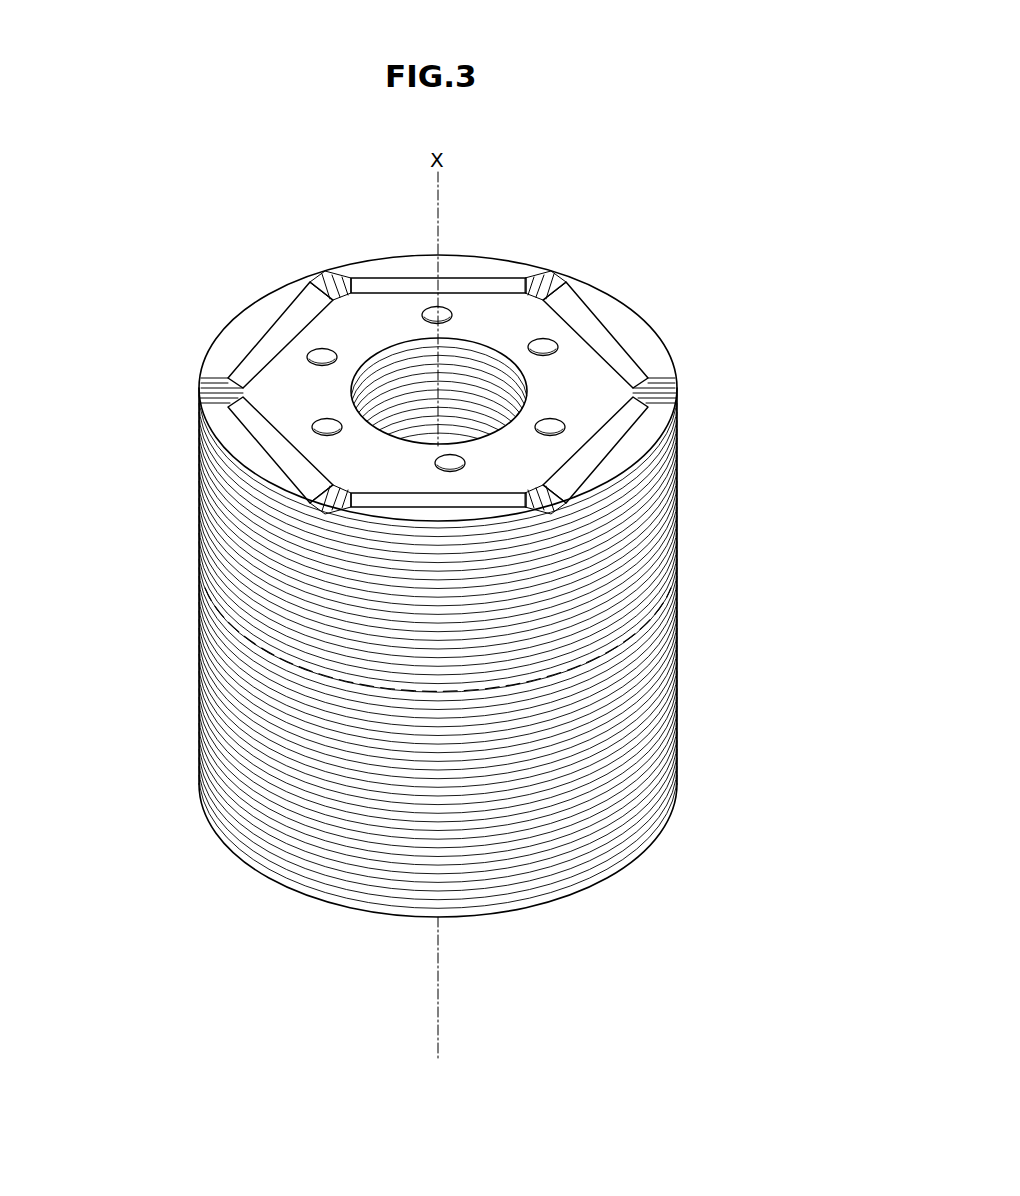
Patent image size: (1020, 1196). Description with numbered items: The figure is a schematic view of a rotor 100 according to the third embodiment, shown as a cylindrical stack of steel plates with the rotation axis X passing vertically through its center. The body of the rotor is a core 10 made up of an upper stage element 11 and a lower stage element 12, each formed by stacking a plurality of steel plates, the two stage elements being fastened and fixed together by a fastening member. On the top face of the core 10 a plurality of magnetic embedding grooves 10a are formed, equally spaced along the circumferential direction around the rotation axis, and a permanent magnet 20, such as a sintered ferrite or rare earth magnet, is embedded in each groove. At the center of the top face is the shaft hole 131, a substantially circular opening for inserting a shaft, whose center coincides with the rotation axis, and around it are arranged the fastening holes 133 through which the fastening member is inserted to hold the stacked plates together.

The rotor 100 is at (217, 231).
The core 10 is at (198, 498).
The magnetic embedding groove 10a is at (334, 263).
The upper stage element 11 is at (683, 395).
The lower stage element 12 is at (683, 587).
The permanent magnet 20 is at (380, 276).
The shaft hole 131 is at (470, 332).
The fastening hole 133 is at (330, 408).